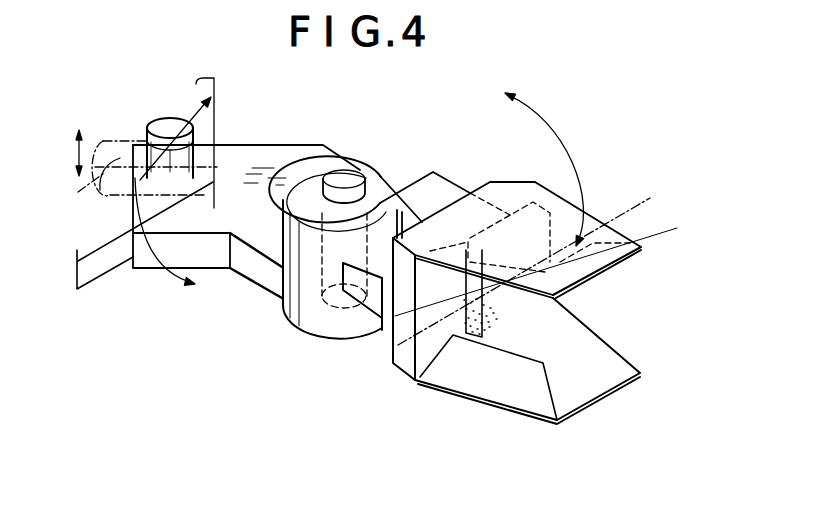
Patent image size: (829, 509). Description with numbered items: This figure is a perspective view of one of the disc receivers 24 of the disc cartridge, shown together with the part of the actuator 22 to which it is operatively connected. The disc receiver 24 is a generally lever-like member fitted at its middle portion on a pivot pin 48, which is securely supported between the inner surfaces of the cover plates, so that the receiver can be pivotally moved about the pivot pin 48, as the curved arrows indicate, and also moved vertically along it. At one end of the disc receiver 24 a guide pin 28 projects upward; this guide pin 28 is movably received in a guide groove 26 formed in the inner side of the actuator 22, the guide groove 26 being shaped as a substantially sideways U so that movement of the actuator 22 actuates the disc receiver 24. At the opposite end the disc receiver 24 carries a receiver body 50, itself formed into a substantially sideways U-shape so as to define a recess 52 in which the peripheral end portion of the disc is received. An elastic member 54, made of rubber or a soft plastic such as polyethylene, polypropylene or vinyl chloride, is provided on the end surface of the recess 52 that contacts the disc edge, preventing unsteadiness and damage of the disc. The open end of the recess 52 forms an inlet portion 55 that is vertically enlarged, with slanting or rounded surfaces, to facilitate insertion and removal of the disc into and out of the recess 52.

The actuator 22 is at (107, 277).
The disc receiver 24 is at (274, 144).
The guide groove 26 is at (129, 180).
The guide pin 28 is at (163, 123).
The pivot pin 48 is at (358, 176).
The receiver body 50 is at (393, 343).
The recess 52 is at (630, 305).
The elastic member 54 is at (518, 311).
The inlet portion 55 is at (577, 403).